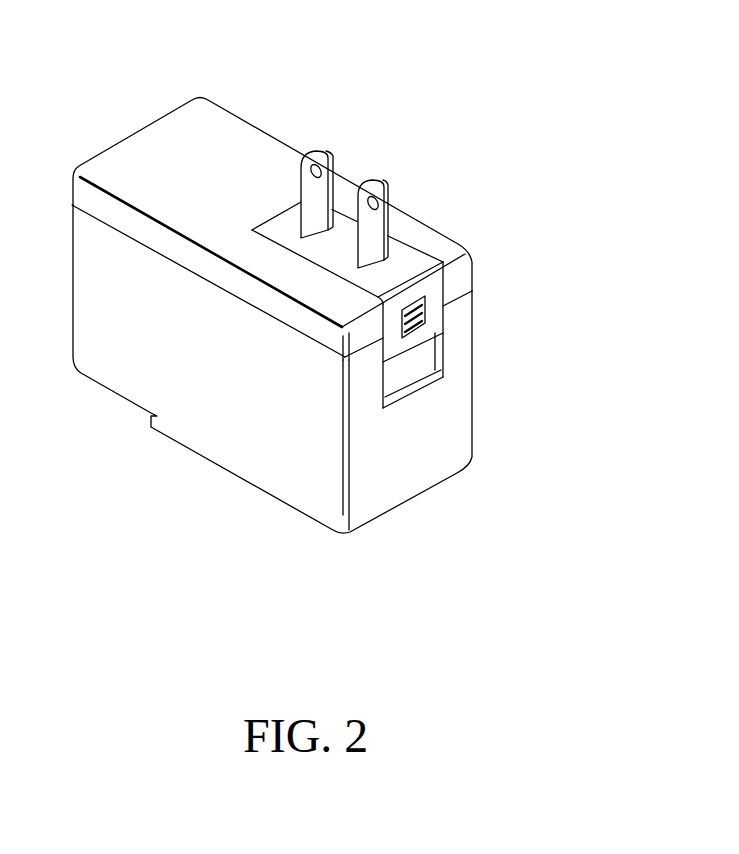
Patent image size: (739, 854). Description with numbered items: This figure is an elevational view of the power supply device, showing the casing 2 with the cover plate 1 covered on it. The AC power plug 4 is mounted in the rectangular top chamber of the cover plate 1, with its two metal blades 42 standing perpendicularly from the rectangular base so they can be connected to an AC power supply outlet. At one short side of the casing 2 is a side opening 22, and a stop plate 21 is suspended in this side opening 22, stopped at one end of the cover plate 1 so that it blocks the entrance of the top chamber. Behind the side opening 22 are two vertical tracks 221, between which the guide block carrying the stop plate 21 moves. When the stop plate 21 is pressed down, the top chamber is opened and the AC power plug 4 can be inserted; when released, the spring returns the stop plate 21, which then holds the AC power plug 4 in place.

The cover plate 1 is at (218, 138).
The casing 2 is at (241, 446).
The AC power plug 4 is at (402, 258).
The metal blades 42 is at (378, 185).
The stop plate 21 is at (437, 318).
The side opening 22 is at (437, 370).
The vertical tracks 221 is at (403, 377).